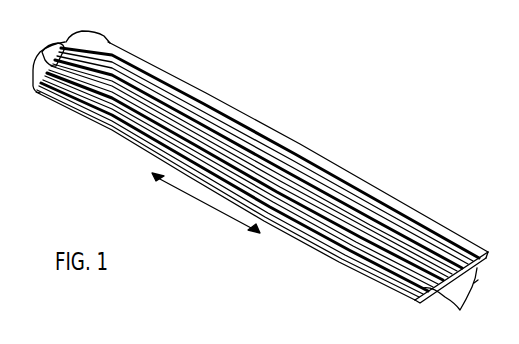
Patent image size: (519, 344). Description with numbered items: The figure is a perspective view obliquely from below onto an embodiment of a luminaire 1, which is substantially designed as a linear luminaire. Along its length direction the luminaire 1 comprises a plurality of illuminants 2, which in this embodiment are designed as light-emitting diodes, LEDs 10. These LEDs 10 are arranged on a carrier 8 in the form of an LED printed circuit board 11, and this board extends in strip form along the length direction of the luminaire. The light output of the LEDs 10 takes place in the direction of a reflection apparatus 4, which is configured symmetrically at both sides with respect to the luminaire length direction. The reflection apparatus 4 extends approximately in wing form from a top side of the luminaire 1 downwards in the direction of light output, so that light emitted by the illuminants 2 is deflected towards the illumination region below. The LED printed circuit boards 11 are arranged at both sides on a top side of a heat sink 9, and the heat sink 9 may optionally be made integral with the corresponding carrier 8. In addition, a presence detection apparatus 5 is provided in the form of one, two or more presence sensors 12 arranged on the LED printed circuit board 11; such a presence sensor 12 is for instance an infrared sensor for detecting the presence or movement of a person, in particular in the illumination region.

The luminaire 1 is at (272, 112).
The illuminants 2 is at (297, 152).
The reflection apparatus 4 is at (460, 310).
The presence detection apparatus 5 is at (234, 103).
The carrier 8 is at (78, 33).
The heat sink 9 is at (45, 46).
The LEDs 10 is at (478, 246).
The LED printed circuit board 11 is at (88, 37).
The presence sensor 12 is at (270, 153).